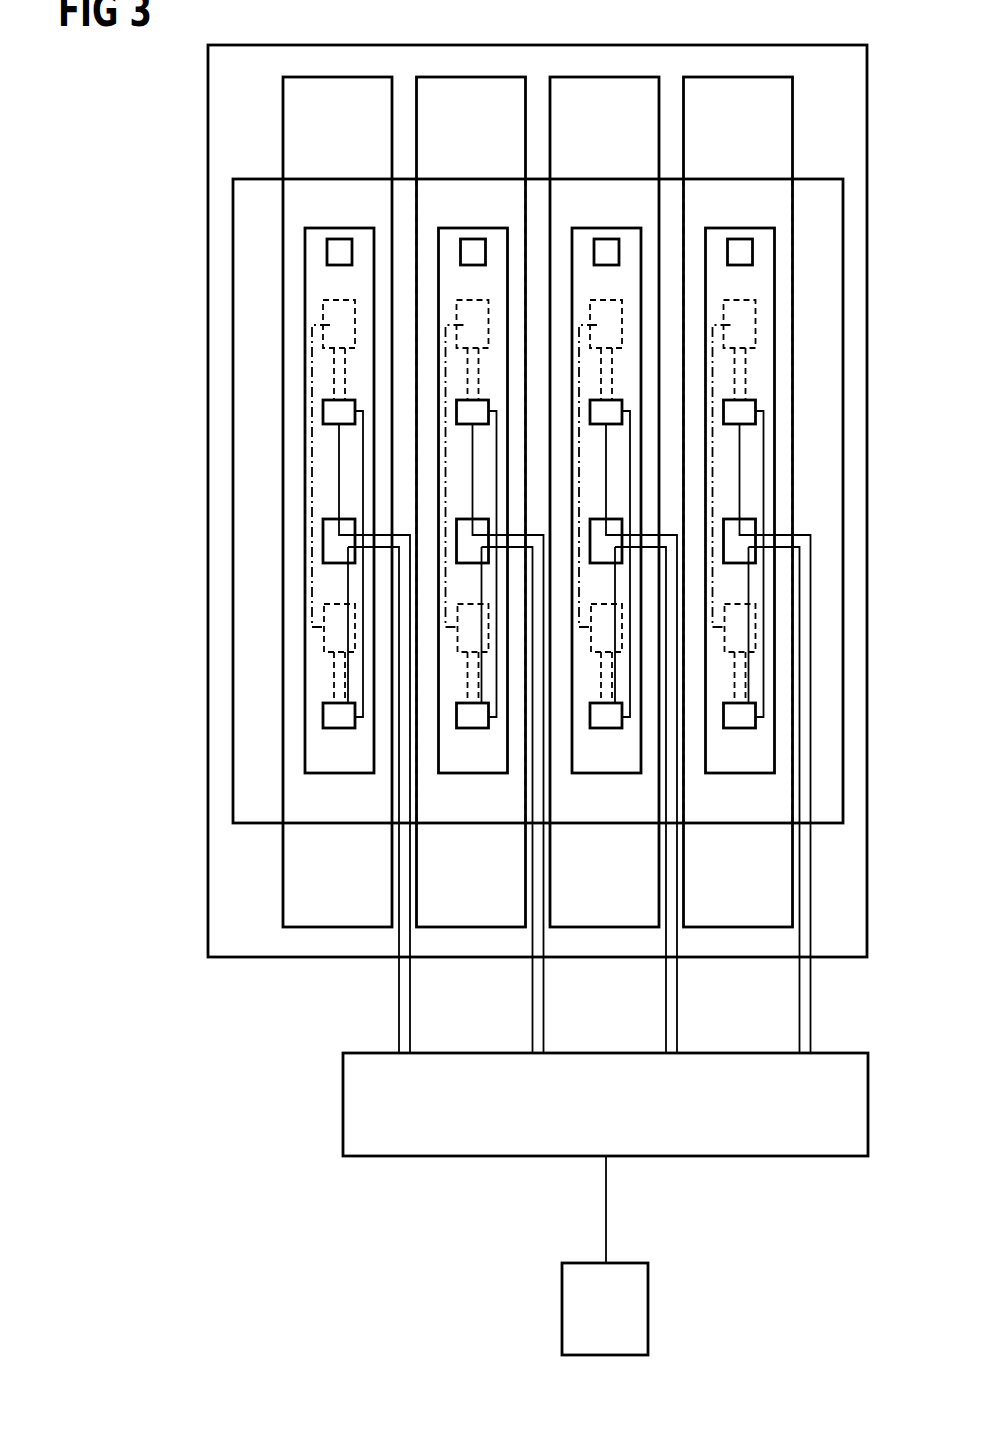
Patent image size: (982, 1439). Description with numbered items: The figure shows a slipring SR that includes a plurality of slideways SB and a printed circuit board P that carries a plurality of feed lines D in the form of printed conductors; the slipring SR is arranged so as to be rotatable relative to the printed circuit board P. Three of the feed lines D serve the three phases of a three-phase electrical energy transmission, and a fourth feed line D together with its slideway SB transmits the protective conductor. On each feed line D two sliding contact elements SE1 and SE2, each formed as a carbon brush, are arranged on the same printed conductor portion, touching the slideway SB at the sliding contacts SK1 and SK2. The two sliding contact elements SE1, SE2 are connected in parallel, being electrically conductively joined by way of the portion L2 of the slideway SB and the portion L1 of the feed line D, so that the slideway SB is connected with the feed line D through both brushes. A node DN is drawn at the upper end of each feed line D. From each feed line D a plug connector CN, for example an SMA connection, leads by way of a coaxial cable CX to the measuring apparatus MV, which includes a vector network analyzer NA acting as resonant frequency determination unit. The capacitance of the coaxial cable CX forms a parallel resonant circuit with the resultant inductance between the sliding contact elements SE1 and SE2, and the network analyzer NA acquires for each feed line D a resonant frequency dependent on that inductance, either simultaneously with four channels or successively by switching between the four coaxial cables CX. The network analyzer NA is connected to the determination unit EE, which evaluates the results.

The slipring SR is at (208, 78).
The slideway SB is at (283, 123).
The printed circuit board P is at (233, 200).
The drain node DN is at (327, 262).
The sliding contact SK2 is at (335, 312).
The sliding contact element SE2 is at (293, 380).
The portion of the feed line L1 is at (362, 452).
The portion of the slideway L2 is at (312, 500).
The plug connector CN is at (323, 548).
The sliding contact SK1 is at (333, 637).
The sliding contact element SE1 is at (293, 692).
The feed line D is at (305, 750).
The coaxial cable CX is at (399, 1009).
The measuring apparatus MV is at (297, 1050).
The network analyzer NA is at (343, 1108).
The determination unit EE is at (562, 1311).